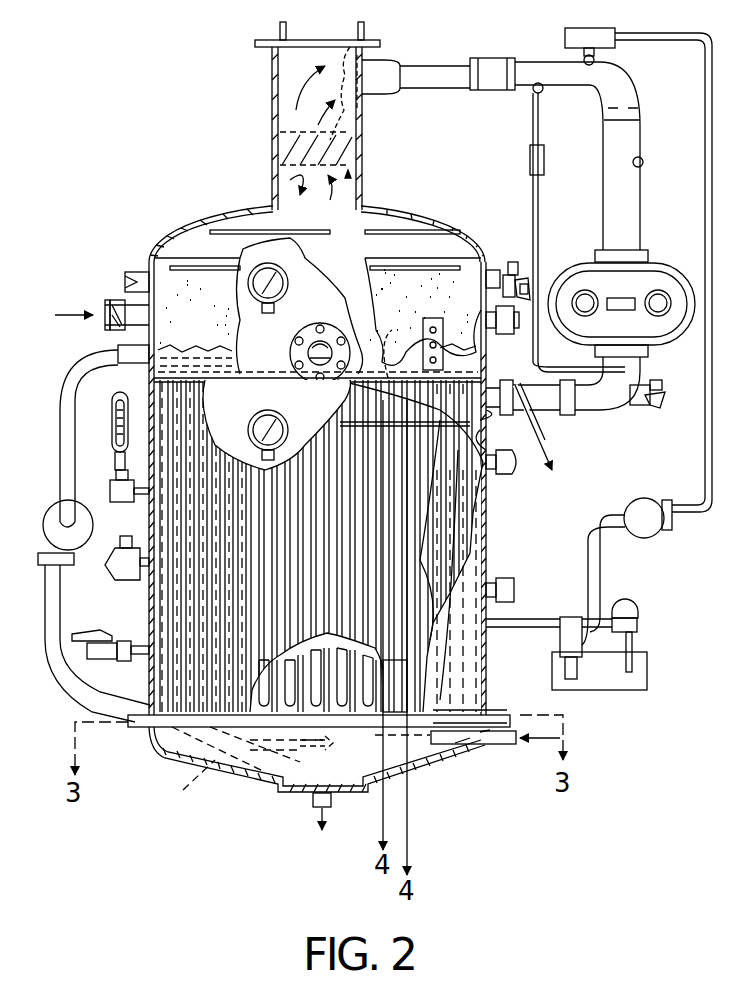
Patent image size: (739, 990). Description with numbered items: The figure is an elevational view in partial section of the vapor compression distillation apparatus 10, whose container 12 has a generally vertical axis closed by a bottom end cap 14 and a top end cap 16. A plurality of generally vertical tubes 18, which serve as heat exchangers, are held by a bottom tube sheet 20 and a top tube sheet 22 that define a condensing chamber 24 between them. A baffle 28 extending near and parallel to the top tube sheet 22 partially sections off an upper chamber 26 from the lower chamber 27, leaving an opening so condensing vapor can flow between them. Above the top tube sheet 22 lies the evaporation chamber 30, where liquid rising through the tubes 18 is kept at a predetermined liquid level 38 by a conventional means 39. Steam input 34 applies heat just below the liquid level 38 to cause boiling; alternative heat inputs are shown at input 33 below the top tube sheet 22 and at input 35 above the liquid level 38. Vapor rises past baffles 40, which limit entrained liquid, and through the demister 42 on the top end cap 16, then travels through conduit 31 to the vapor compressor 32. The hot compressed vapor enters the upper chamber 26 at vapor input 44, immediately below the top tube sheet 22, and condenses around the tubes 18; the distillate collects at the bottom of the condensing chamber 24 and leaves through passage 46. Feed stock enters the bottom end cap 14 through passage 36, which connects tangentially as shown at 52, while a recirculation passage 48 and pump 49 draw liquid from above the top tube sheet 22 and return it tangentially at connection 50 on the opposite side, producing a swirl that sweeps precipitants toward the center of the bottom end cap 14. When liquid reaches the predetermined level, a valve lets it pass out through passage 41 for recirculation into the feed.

The vapor compression distillation apparatus 10 is at (95, 198).
The container 12 is at (143, 333).
The bottom end cap 14 is at (232, 780).
The top end cap 16 is at (407, 205).
The generally vertical tubes 18 is at (486, 520).
The bottom tube sheet 20 is at (150, 686).
The top tube sheet 22 is at (150, 383).
The condensing chamber 24 is at (178, 600).
The upper chamber 26 is at (486, 462).
The lower chamber 27 is at (486, 550).
The baffle 28 is at (486, 492).
The evaporation chamber 30 is at (130, 282).
The conduit 31 is at (628, 102).
The vapor compressor 32 is at (665, 262).
The input 33 is at (125, 400).
The steam input 34 is at (140, 346).
The input 35 is at (112, 303).
The passage 36 is at (518, 748).
The liquid level 38 is at (383, 347).
The conventional means 39 is at (500, 268).
The baffles 40 is at (430, 246).
The passage 41 is at (312, 825).
The demister 42 is at (283, 142).
The vapor input 44 is at (555, 416).
The passage 46 is at (536, 632).
The recirculation passage 48 is at (55, 455).
The pump 49 is at (44, 515).
The tangential connection 50 is at (191, 788).
The tangential connection 52 is at (482, 748).